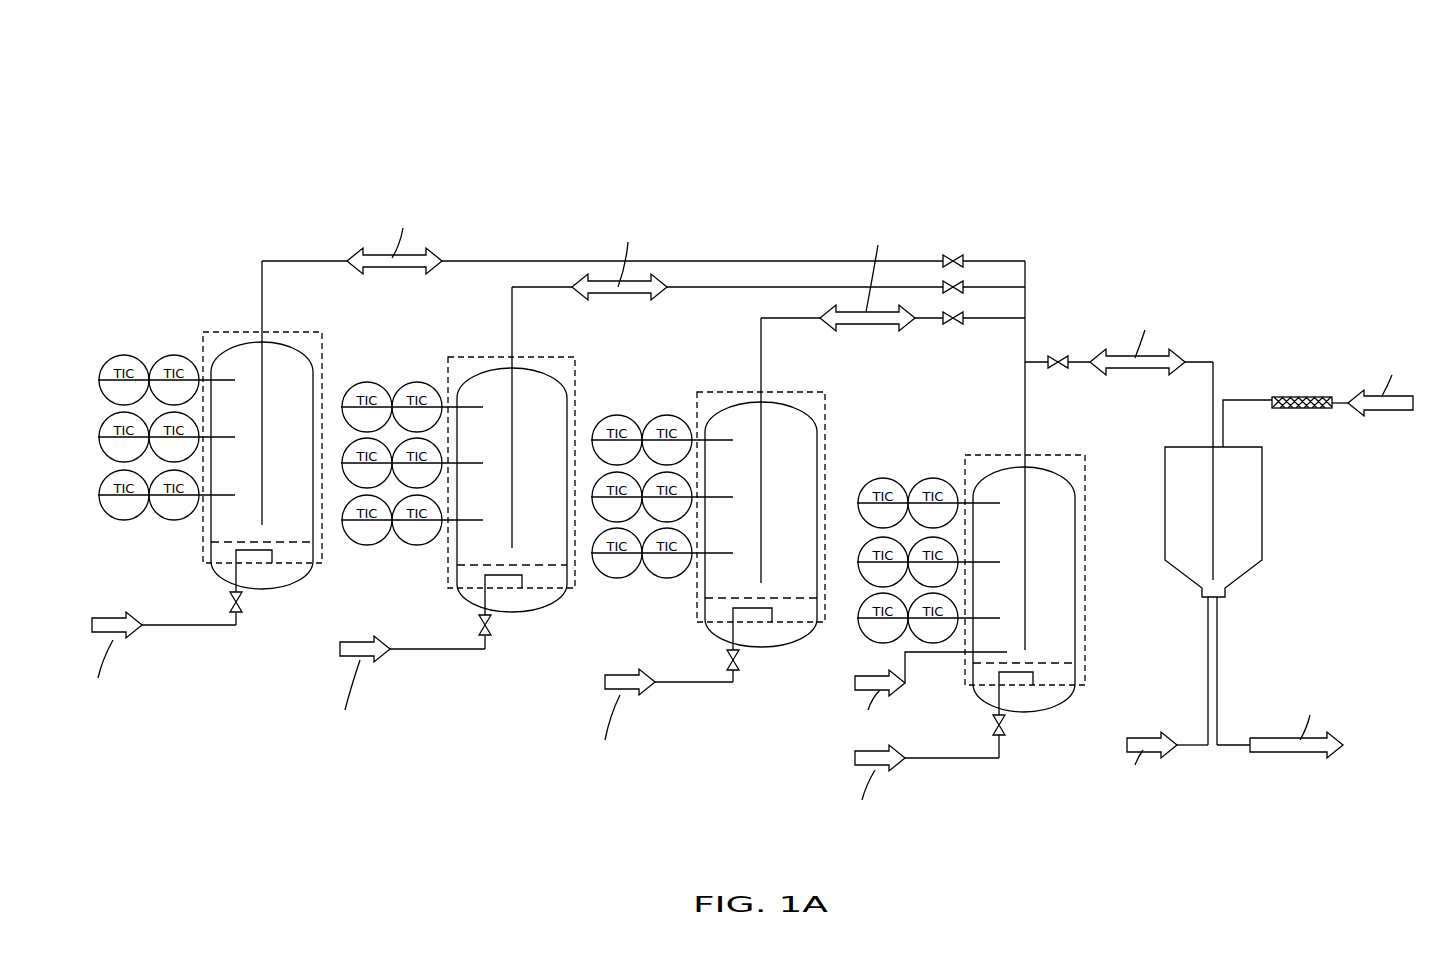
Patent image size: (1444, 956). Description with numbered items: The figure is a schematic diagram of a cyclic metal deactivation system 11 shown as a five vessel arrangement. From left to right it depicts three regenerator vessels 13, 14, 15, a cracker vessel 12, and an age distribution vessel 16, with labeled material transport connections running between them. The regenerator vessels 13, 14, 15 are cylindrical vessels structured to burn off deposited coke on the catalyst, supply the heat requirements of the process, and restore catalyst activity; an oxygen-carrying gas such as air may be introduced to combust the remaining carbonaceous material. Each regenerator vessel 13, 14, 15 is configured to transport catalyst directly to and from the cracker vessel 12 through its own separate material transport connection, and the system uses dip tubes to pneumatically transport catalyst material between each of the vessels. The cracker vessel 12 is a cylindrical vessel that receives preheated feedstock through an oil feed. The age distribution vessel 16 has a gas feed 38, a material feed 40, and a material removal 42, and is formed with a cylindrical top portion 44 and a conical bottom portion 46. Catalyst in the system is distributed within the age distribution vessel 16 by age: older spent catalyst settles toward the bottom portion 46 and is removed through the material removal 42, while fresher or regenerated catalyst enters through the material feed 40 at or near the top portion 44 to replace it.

The cyclic metal deactivation system 11 is at (257, 126).
The cracker vessel 12 is at (935, 465).
The regenerator vessel 13 is at (172, 338).
The regenerator vessel 14 is at (426, 372).
The regenerator vessel 15 is at (675, 405).
The age distribution vessel 16 is at (1162, 455).
The gas feed 38 is at (1198, 748).
The material feed 40 is at (1260, 400).
The material removal 42 is at (1228, 742).
The top portion 44 is at (1245, 447).
The bottom portion 46 is at (1226, 590).